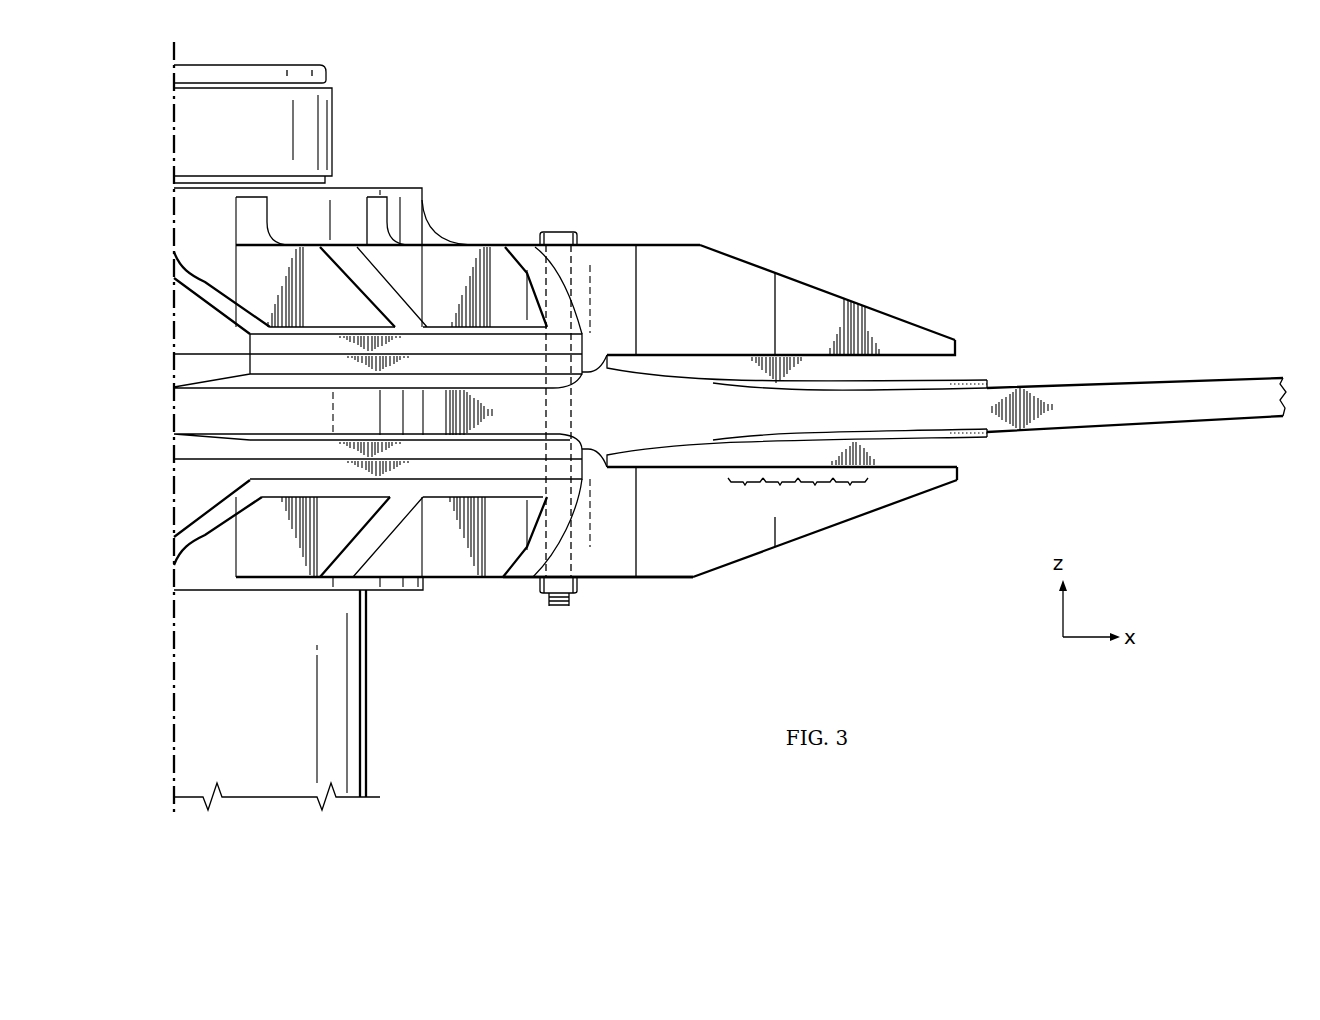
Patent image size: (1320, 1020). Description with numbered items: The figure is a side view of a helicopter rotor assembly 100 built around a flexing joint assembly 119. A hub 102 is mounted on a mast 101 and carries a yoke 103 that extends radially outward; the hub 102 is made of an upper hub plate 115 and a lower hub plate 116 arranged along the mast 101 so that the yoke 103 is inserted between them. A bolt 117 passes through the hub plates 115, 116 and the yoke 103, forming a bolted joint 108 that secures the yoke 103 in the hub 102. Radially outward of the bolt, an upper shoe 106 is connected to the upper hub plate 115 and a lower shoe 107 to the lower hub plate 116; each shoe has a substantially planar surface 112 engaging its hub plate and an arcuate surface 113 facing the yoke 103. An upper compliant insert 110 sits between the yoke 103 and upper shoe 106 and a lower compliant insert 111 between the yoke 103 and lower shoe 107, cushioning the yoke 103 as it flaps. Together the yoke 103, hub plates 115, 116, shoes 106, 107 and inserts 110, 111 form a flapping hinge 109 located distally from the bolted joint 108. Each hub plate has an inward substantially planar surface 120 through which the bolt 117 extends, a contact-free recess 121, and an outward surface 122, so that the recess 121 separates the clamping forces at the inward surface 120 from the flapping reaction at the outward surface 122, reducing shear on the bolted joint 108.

The rotor assembly 100 is at (730, 387).
The mast 101 is at (333, 131).
The hub 102 is at (482, 225).
The yoke 103 is at (1160, 423).
The upper shoe 106 is at (819, 299).
The lower shoe 107 is at (819, 539).
The bolted joint 108 is at (561, 633).
The flapping hinge 109 is at (766, 436).
The upper compliant insert 110 is at (978, 380).
The lower compliant insert 111 is at (978, 433).
The substantially planar surface 112 is at (831, 363).
The arcuate surface 113 is at (884, 386).
The upper hub plate 115 is at (806, 284).
The lower hub plate 116 is at (846, 524).
The bolt 117 is at (560, 231).
The flexing joint assembly 119 is at (827, 538).
The inward substantially planar surface 120 is at (590, 444).
The recess 121 is at (847, 427).
The outward surface 122 is at (831, 458).